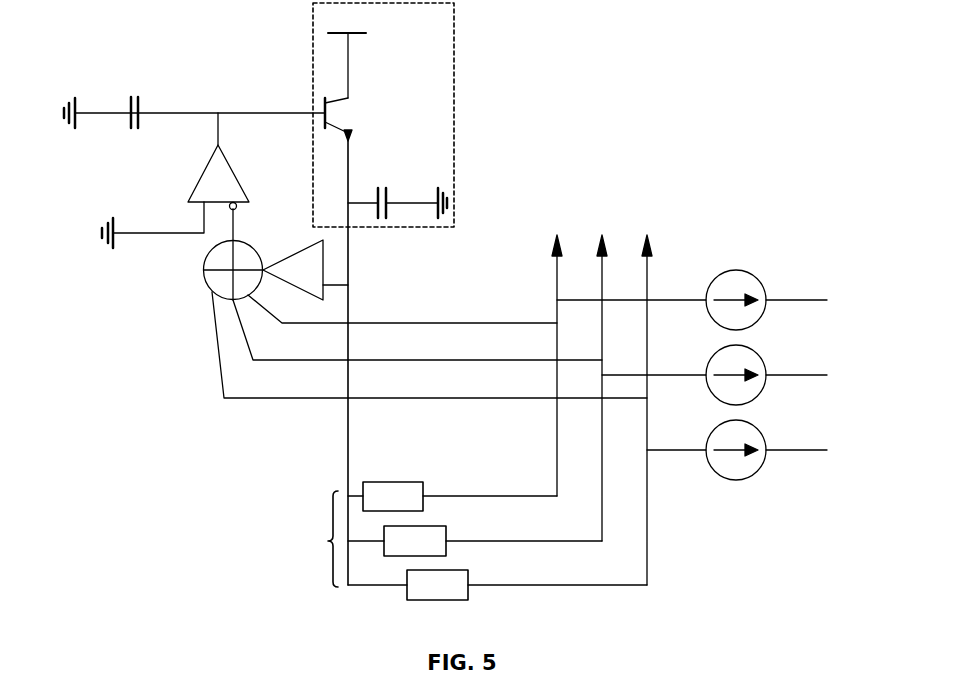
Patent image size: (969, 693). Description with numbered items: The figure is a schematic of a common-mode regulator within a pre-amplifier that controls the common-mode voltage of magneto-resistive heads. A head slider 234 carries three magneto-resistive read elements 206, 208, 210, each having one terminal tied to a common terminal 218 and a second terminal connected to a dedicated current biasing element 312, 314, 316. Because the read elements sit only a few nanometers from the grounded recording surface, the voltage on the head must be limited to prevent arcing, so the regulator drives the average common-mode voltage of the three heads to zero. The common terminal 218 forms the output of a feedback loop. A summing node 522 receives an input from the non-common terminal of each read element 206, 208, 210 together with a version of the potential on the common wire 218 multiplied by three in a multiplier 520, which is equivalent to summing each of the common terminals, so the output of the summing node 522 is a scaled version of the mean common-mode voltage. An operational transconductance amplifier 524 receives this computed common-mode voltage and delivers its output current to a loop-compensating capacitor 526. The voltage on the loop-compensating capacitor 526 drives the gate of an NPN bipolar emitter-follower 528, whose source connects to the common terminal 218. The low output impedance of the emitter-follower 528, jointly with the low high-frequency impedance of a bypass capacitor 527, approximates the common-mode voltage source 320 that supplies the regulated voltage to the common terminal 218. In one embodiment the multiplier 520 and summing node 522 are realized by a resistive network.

The loop-compensating capacitor 526 is at (138, 97).
The operational transconductance amplifier 524 is at (188, 202).
The NPN bipolar emitter-follower 528 is at (347, 100).
The bypass capacitor 527 is at (387, 184).
The common-mode voltage source 320 is at (454, 83).
The multiplier 520 is at (323, 262).
The summing node 522 is at (203, 272).
The current biasing element 312 is at (743, 270).
The current biasing element 314 is at (760, 352).
The current biasing element 316 is at (760, 427).
The common terminal 218 is at (348, 455).
The magneto-resistive read element 206 is at (390, 480).
The magneto-resistive read element 208 is at (447, 530).
The magneto-resistive read element 210 is at (468, 577).
The head slider 234 is at (443, 518).